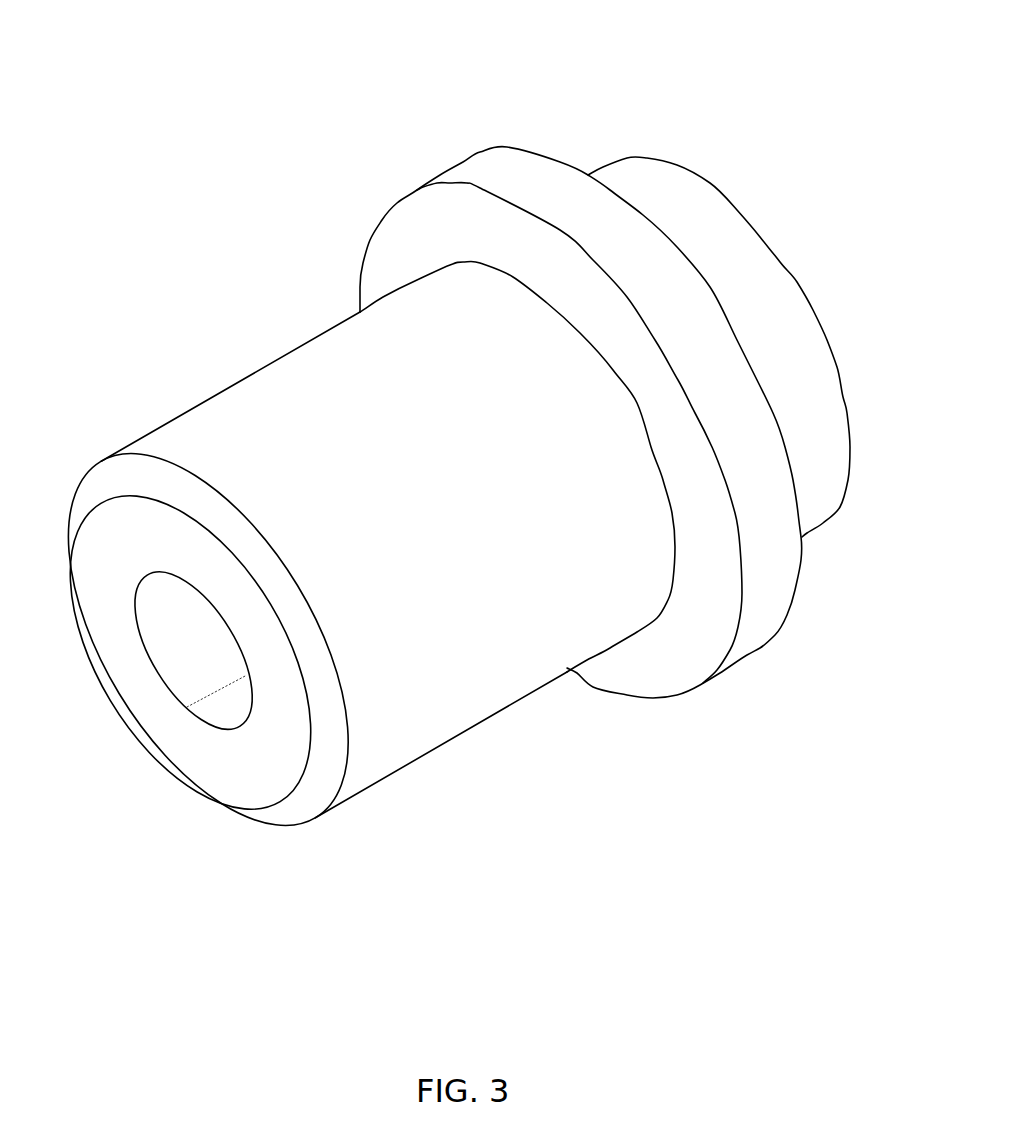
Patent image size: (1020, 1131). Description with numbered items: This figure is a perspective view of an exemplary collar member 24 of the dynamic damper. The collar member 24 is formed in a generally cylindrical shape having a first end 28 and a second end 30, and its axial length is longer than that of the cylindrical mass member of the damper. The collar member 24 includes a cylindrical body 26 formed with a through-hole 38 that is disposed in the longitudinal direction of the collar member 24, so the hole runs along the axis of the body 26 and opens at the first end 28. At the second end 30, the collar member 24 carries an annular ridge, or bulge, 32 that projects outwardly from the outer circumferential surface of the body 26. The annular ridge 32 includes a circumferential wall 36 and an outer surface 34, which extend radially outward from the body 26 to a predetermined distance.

The collar member 24 is at (784, 99).
The cylindrical body 26 is at (425, 718).
The first end 28 is at (232, 776).
The second end 30 is at (780, 262).
The annular ridge 32 is at (780, 557).
The outer surface 34 is at (670, 675).
The circumferential wall 36 is at (753, 628).
The through-hole 38 is at (175, 630).